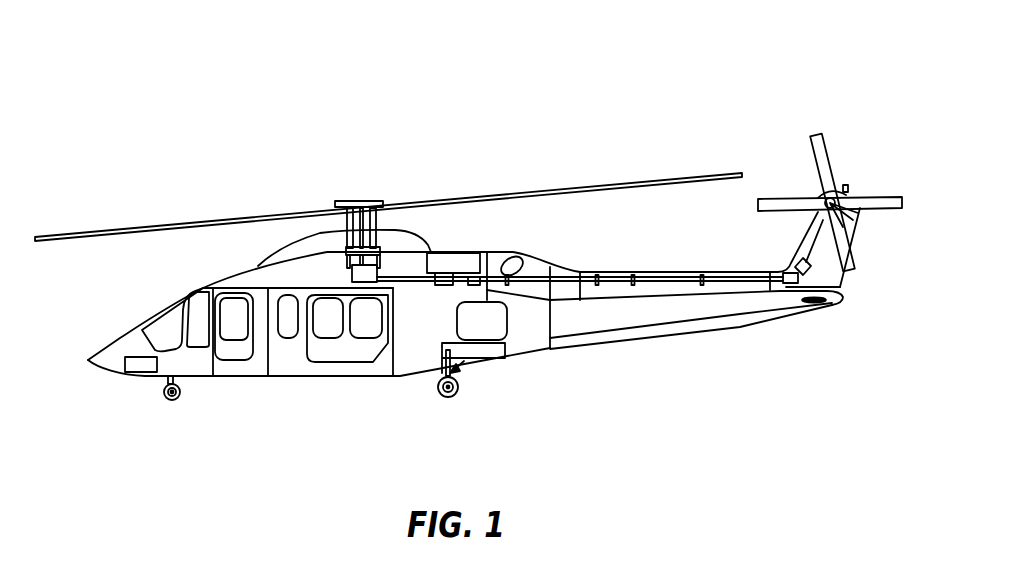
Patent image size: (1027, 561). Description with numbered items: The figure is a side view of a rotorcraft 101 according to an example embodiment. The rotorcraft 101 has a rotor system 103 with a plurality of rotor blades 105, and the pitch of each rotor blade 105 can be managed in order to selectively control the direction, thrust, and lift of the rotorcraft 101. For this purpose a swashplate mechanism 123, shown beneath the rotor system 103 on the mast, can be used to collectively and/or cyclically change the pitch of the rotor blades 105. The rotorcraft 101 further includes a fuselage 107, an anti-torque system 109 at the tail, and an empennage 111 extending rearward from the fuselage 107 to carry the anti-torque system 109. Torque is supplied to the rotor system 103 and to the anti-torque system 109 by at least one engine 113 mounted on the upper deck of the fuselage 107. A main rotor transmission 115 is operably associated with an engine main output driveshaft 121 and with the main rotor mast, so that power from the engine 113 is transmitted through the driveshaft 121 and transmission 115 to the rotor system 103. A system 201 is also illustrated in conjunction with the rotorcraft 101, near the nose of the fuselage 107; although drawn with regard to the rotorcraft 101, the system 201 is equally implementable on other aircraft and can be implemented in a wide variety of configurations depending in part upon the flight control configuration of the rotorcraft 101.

The rotorcraft 101 is at (254, 95).
The rotor system 103 is at (395, 178).
The rotor blade 105 is at (605, 183).
The fuselage 107 is at (281, 376).
The anti-torque system 109 is at (860, 170).
The empennage 111 is at (683, 337).
The engine 113 is at (448, 252).
The main rotor transmission 115 is at (350, 276).
The engine main output driveshaft 121 is at (417, 283).
The swashplate mechanism 123 is at (392, 238).
The system 201 is at (140, 373).